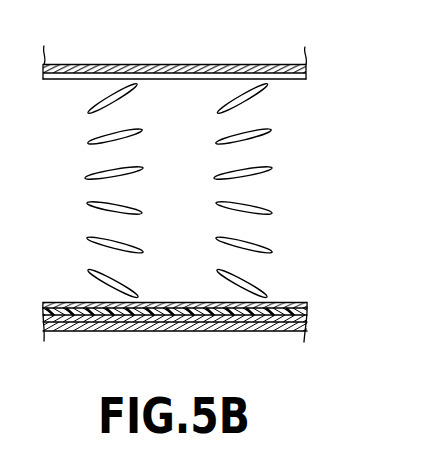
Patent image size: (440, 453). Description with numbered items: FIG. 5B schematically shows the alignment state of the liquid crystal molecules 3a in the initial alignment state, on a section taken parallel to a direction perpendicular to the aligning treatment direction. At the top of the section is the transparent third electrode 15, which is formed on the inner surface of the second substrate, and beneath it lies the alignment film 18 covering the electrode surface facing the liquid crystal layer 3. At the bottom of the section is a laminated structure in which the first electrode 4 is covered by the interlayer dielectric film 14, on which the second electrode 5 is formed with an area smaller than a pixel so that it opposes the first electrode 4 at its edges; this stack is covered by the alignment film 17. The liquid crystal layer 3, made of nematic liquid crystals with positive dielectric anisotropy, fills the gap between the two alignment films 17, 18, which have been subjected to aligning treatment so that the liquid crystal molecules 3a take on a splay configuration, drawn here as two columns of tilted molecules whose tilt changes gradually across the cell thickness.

The third electrode 15 is at (163, 64).
The alignment film 18 is at (58, 80).
The liquid crystal layer 3 is at (167, 190).
The liquid crystal molecules 3a is at (88, 203).
The alignment film 17 is at (60, 302).
The interlayer dielectric film 14 is at (183, 322).
The first electrode 4 is at (130, 327).
The second electrode 5 is at (169, 316).